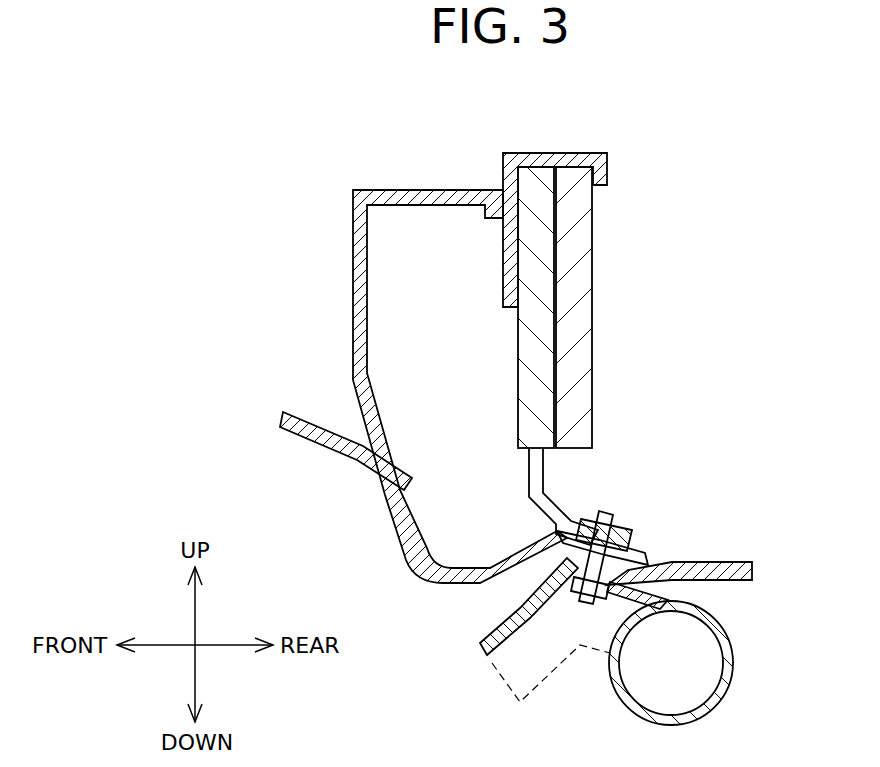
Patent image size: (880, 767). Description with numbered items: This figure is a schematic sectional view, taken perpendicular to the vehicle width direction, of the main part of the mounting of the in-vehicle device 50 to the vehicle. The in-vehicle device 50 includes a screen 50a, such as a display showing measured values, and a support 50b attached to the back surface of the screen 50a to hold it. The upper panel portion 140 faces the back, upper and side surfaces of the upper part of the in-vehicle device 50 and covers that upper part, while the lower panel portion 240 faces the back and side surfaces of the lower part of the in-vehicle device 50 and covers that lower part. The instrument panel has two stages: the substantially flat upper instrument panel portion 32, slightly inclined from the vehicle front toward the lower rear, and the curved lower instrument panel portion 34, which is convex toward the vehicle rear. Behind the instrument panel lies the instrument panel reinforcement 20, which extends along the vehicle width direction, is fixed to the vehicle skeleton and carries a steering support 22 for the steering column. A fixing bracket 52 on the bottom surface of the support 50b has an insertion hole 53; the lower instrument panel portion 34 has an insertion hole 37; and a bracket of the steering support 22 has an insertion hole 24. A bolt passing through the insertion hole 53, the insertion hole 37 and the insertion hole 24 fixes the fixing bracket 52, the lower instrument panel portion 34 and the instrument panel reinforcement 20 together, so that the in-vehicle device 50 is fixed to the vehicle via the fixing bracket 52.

The upper panel portion 140 is at (556, 153).
The lower panel portion 240 is at (353, 282).
The in-vehicle device 50 is at (649, 307).
The screen 50a is at (580, 272).
The support 50b is at (540, 345).
The upper instrument panel portion 32 is at (300, 436).
The fixing bracket 52 is at (545, 477).
The insertion hole 53 is at (618, 530).
The insertion hole 37 is at (612, 532).
The lower instrument panel portion 34 is at (738, 562).
The instrument panel reinforcement 20 is at (736, 663).
The steering support 22 is at (503, 620).
The insertion hole 24 is at (568, 600).